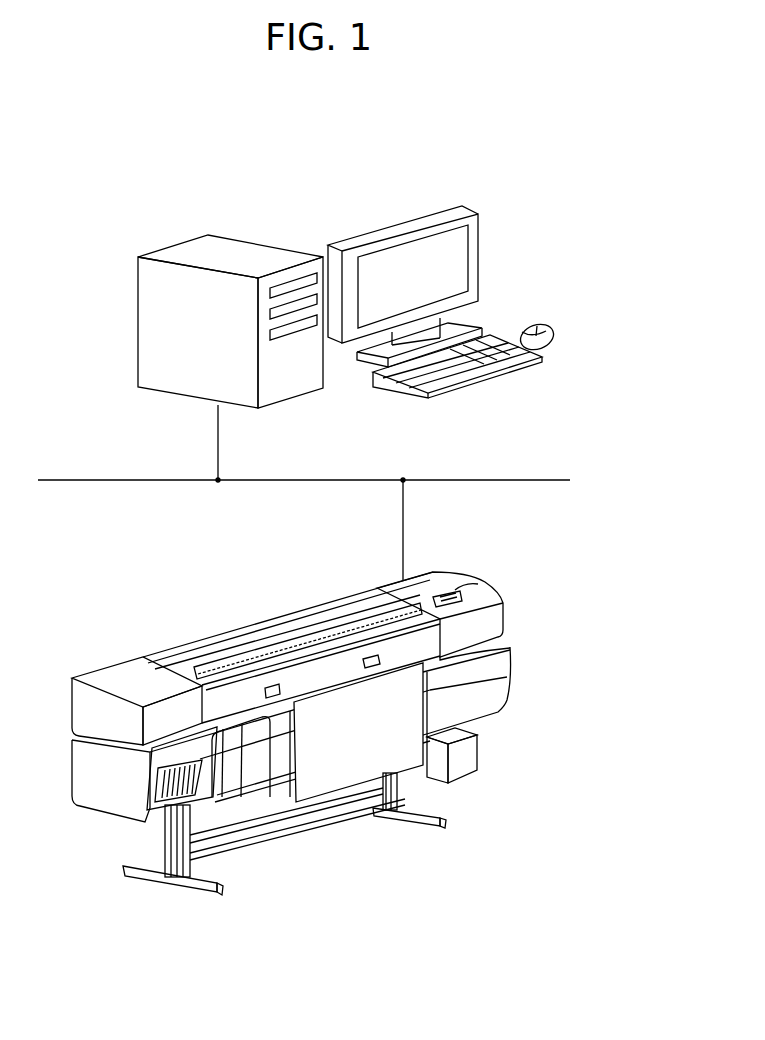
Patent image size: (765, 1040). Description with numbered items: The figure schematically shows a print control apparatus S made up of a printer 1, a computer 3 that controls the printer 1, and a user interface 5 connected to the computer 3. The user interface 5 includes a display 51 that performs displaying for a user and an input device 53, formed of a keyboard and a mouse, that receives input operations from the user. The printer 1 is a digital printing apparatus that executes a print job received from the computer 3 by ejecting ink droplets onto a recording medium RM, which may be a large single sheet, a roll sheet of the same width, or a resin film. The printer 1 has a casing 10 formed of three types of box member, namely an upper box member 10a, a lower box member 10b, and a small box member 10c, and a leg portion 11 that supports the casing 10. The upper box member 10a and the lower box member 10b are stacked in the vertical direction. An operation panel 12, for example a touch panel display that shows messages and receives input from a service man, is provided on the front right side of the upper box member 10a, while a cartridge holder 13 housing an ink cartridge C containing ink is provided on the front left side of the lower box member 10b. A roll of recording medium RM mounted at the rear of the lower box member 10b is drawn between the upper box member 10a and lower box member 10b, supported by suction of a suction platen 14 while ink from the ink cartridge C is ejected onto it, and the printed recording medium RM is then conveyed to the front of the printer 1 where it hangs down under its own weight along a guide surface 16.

The print control apparatus S is at (60, 210).
The computer 3 is at (220, 247).
The user interface 5 is at (526, 283).
The display 51 is at (478, 253).
The input device 53 is at (500, 392).
The printer 1 is at (180, 587).
The casing 10 is at (579, 601).
The upper box member 10a is at (505, 616).
The lower box member 10b is at (512, 660).
The small box member 10c is at (480, 758).
The operation panel 12 is at (477, 589).
The cartridge holder 13 is at (152, 785).
The ink cartridge C is at (155, 800).
The suction platen 14 is at (262, 715).
The guide surface 16 is at (238, 757).
The recording medium RM is at (355, 767).
The leg portion 11 is at (408, 797).